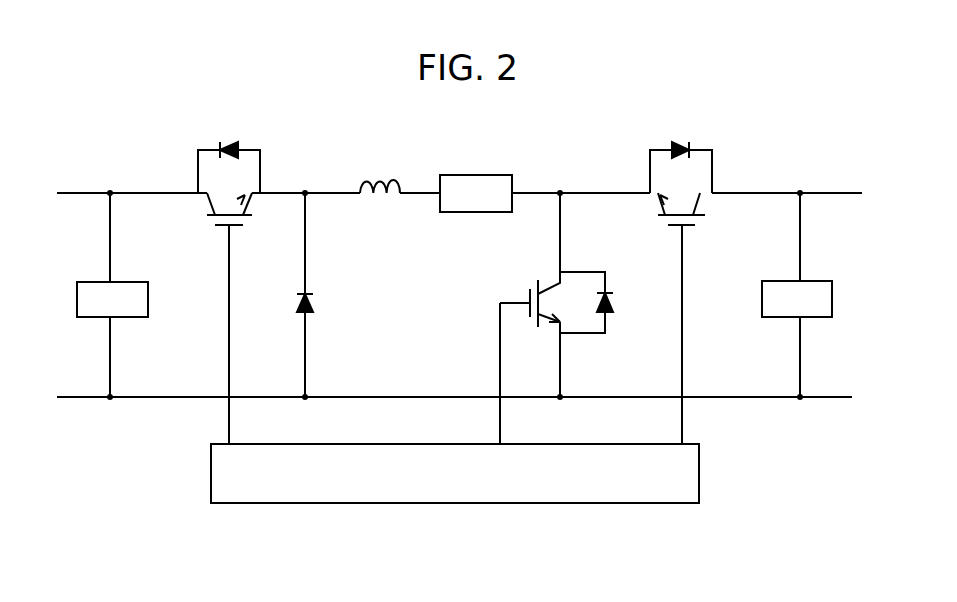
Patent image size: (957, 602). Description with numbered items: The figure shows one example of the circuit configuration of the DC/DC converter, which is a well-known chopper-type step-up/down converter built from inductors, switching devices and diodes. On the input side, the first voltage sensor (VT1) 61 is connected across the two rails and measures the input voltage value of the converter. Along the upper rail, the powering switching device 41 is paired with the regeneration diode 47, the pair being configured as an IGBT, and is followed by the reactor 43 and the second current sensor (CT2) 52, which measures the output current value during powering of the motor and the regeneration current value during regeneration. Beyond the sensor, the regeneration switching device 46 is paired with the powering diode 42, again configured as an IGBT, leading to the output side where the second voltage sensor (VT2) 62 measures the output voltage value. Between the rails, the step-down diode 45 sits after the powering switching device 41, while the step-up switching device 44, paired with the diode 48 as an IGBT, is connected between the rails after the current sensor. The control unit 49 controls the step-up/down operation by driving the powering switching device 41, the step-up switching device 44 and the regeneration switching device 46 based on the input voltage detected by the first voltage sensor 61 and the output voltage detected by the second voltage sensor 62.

The powering switching device 41 is at (222, 227).
The powering diode 42 is at (680, 142).
The reactor 43 is at (380, 175).
The step-up switching device 44 is at (527, 295).
The step-down diode 45 is at (312, 302).
The regeneration switching device 46 is at (687, 228).
The regeneration diode 47 is at (230, 142).
The diode 48 is at (610, 303).
The control unit 49 is at (573, 505).
The second current sensor (CT2) 52 is at (493, 175).
The first voltage sensor (VT1) 61 is at (95, 280).
The second voltage sensor (VT2) 62 is at (817, 280).